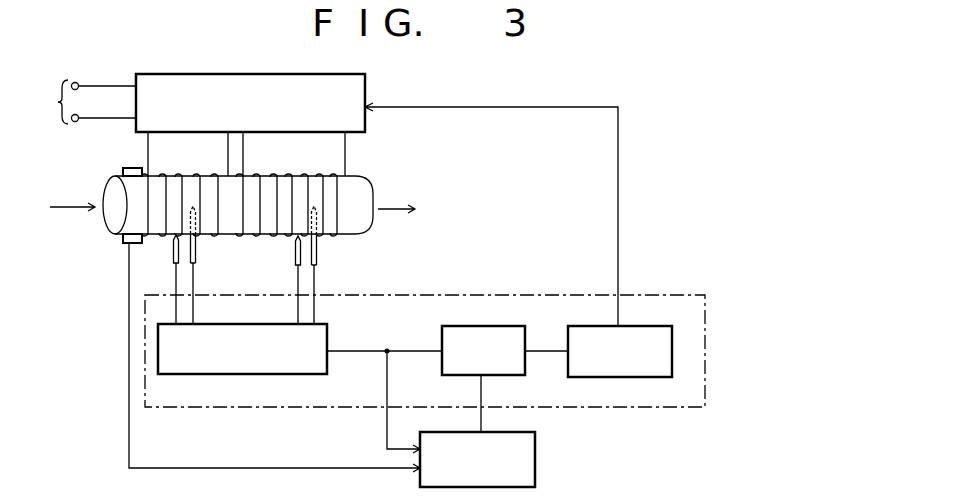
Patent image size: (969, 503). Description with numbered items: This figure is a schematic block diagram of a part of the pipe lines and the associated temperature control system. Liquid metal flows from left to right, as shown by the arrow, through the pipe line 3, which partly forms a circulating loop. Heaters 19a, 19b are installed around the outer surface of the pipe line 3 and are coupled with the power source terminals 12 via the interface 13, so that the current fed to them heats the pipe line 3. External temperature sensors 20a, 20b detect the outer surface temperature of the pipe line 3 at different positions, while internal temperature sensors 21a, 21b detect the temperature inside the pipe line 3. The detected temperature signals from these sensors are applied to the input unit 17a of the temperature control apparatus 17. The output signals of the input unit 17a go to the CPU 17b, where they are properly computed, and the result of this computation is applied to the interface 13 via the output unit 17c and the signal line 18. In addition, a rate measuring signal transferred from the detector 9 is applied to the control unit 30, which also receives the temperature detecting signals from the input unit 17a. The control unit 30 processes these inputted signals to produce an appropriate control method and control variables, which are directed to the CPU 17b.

The pipe line 3 is at (370, 176).
The detector 9 is at (128, 168).
The power source terminals 12 is at (85, 102).
The interface 13 is at (366, 79).
The temperature control apparatus 17 is at (676, 295).
The input unit 17a is at (345, 330).
The CPU 17b is at (441, 334).
The output unit 17c is at (584, 326).
The signal line 18 is at (528, 107).
The heater 19a is at (149, 151).
The heater 19b is at (244, 151).
The external temperature sensor 20a is at (172, 254).
The external temperature sensor 20b is at (295, 254).
The internal temperature sensor 21a is at (196, 254).
The internal temperature sensor 21b is at (317, 259).
The control unit 30 is at (537, 458).